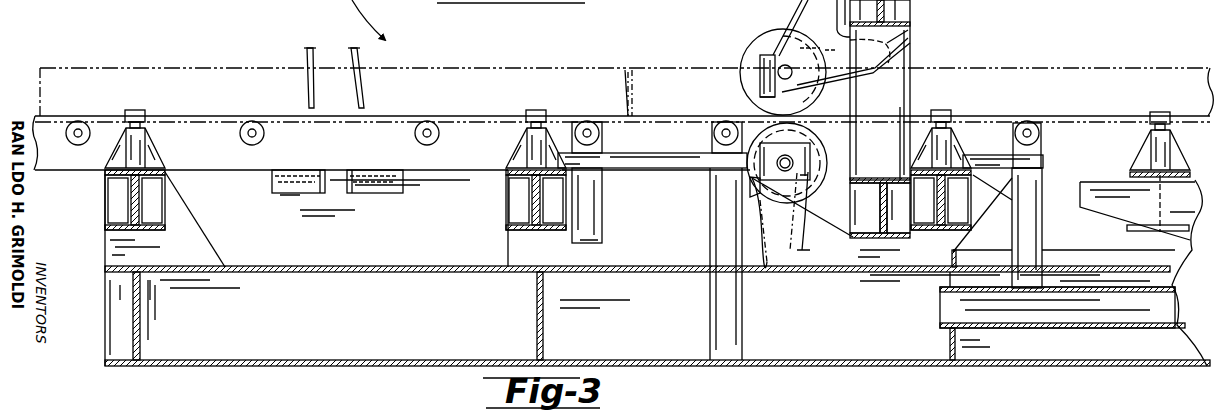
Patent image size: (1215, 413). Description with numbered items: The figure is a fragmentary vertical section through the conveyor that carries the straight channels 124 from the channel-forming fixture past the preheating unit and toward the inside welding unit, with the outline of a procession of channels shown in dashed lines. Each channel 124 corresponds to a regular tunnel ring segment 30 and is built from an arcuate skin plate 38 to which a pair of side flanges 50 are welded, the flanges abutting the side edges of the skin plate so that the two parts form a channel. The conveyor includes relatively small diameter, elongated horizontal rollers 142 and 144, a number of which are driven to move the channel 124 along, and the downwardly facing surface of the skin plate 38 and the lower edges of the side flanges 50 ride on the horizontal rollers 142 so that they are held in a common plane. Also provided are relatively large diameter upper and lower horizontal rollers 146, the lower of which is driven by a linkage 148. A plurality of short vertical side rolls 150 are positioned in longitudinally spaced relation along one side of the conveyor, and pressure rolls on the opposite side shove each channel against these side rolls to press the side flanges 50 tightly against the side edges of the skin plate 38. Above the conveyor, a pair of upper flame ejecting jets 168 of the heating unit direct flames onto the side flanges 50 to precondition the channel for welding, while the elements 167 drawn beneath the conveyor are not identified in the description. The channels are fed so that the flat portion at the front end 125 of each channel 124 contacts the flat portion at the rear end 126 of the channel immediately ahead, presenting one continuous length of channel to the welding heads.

The regular tunnel ring segment 30 is at (32, 110).
The skin plate 38 is at (452, 113).
The side flanges 50 is at (493, 90).
The straight channel 124 is at (213, 67).
The front end 125 is at (627, 71).
The rear end 126 is at (633, 68).
The horizontal rollers 142 is at (82, 147).
The horizontal rollers 144 is at (598, 137).
The upper and lower horizontal rollers 146 is at (755, 135).
The linkage 148 is at (762, 258).
The vertical side rolls 150 is at (134, 110).
The magnet block 167 is at (373, 193).
The upper flame ejecting jets 168 is at (354, 50).